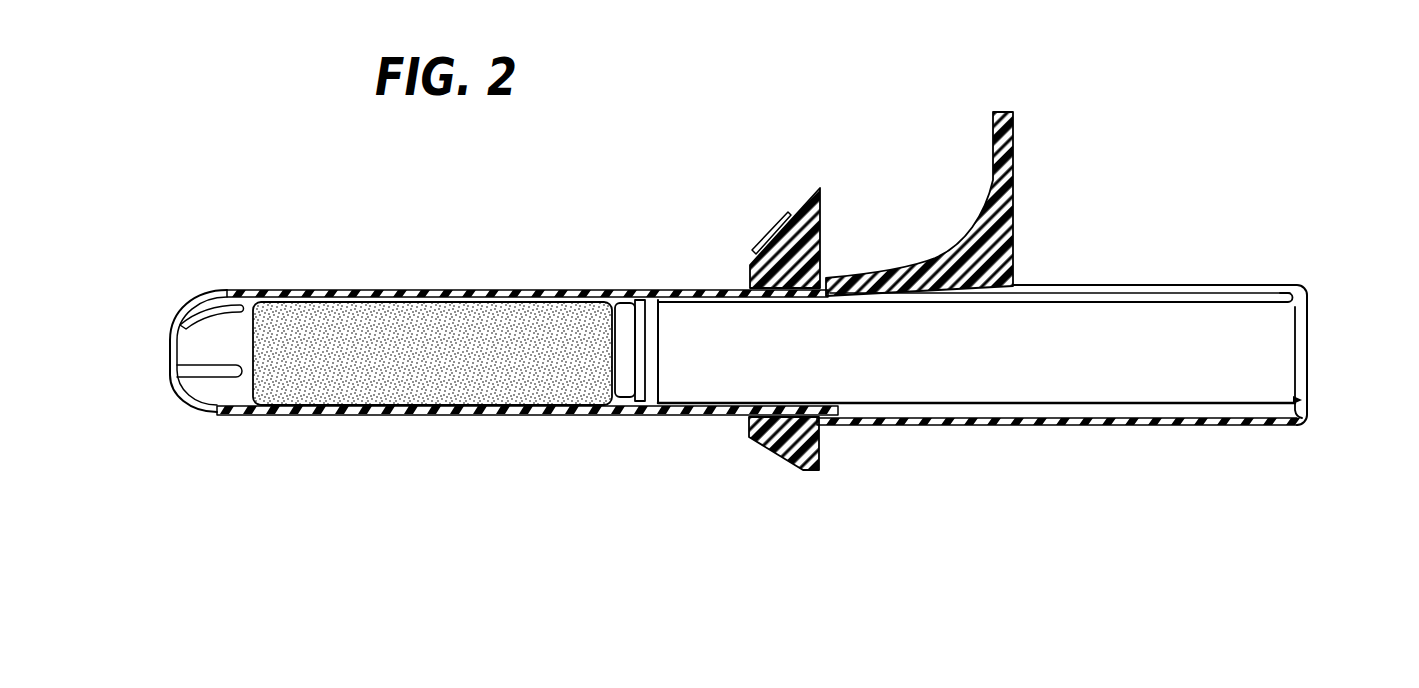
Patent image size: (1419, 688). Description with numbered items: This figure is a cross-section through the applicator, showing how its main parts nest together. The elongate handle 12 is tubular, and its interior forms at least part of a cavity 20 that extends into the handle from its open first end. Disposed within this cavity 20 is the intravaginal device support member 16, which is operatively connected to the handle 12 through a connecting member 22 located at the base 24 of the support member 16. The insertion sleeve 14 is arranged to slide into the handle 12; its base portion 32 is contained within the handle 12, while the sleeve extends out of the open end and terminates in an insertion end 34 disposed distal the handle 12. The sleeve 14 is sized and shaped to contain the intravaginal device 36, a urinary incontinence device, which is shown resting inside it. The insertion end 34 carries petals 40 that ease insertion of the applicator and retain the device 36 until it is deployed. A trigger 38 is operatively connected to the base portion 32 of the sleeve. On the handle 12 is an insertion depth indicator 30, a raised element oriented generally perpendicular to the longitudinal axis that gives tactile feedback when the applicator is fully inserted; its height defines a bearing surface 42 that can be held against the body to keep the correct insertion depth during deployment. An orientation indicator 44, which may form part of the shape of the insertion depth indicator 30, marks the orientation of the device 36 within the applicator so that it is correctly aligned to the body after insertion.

The elongate handle 12 is at (985, 425).
The insertion sleeve 14 is at (372, 292).
The intravaginal device support member 16 is at (1180, 358).
The cavity 20 is at (1087, 405).
The connecting member 22 is at (1308, 405).
The base 24 is at (1240, 323).
The insertion depth indicator 30 is at (732, 203).
The base portion 32 is at (843, 410).
The insertion end 34 is at (183, 425).
The intravaginal device 36 is at (440, 360).
The trigger 38 is at (1003, 130).
The petals 40 is at (194, 393).
The bearing surface 42 is at (760, 257).
The orientation indicator 44 is at (771, 233).